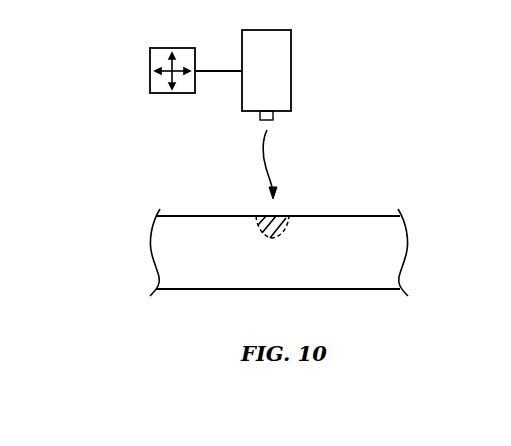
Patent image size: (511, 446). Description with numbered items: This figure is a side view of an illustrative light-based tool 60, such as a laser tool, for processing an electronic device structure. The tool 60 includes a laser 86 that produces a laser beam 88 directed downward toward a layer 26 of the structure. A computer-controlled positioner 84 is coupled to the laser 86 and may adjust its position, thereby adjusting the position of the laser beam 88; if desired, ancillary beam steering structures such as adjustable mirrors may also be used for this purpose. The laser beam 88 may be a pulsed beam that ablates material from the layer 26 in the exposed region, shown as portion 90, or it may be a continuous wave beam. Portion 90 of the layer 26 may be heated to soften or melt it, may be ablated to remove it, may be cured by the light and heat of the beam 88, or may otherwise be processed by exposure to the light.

The layer 26 is at (350, 275).
The tool 60 is at (417, 102).
The computer-controlled positioner 84 is at (162, 93).
The laser 86 is at (283, 63).
The laser beam 88 is at (268, 152).
The portion 90 is at (282, 218).